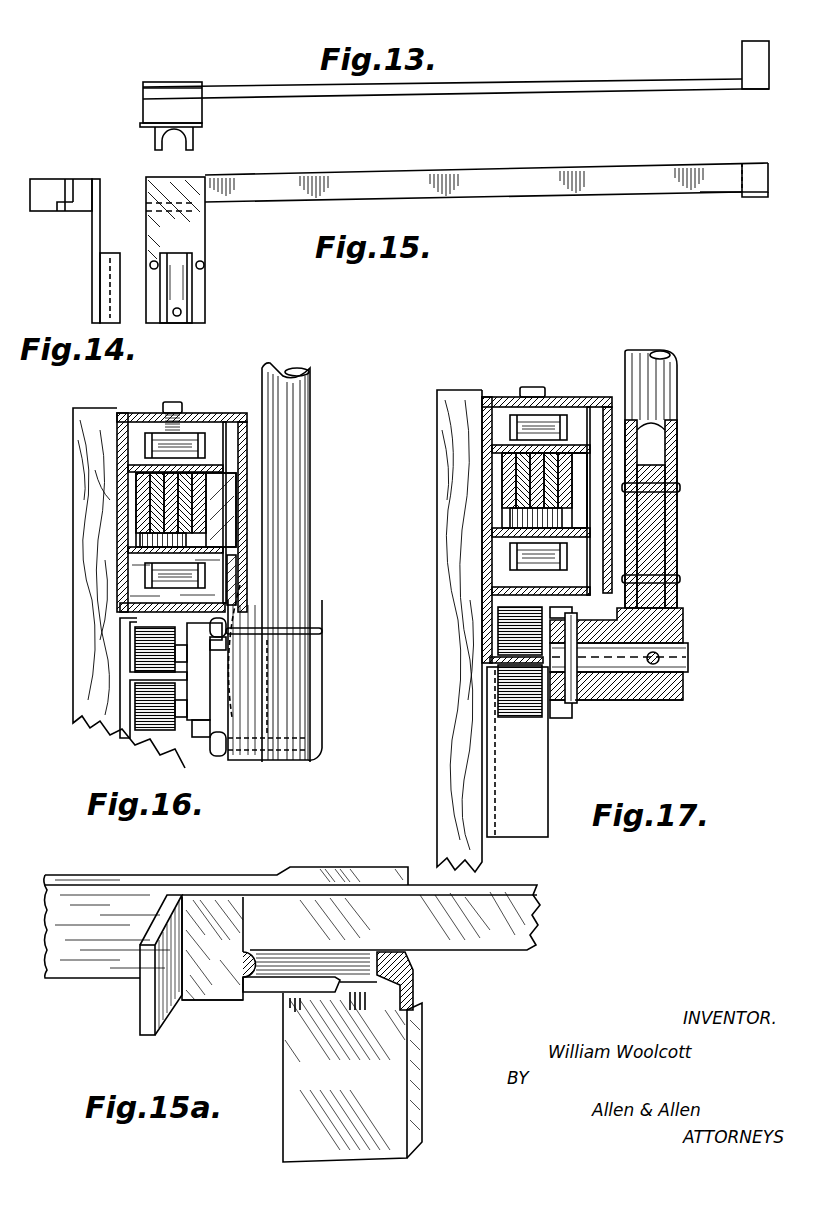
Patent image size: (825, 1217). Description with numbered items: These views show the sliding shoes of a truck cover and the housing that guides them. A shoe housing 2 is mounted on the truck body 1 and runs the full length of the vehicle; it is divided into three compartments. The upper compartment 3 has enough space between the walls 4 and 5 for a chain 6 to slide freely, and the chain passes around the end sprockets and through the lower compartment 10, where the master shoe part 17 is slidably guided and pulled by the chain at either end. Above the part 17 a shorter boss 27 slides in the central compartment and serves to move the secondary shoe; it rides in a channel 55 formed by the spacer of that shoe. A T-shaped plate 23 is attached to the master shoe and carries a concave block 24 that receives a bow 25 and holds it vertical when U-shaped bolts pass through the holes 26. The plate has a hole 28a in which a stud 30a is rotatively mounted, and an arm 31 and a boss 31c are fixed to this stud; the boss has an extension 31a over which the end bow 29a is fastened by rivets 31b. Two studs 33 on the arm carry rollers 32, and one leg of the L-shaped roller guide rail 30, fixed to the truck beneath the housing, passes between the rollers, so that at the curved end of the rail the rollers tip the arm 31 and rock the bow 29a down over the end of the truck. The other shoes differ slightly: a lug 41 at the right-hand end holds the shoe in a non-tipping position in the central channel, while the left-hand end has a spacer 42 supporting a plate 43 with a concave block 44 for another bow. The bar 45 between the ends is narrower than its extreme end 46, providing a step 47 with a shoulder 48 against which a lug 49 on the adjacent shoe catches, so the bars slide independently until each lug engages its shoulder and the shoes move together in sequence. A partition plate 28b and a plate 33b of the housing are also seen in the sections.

In FIG. 16, the truck body 1 is at (97, 707).
In FIG. 17, the truck body 1 is at (445, 447).
In FIG. 16, the shoe housing 2 is at (123, 518).
In FIG. 17, the shoe housing 2 is at (483, 417).
In FIG. 16, the upper compartment 3 is at (135, 440).
In FIG. 17, the upper compartment 3 is at (500, 420).
In FIG. 16, the wall 4 is at (188, 440).
In FIG. 17, the wall 4 is at (543, 422).
In FIG. 16, the wall 5 is at (120, 483).
In FIG. 17, the wall 5 is at (572, 443).
In FIG. 16, the chain 6 is at (207, 424).
In FIG. 17, the chain 6 is at (548, 412).
In FIG. 16, the lower compartment 10 is at (120, 613).
In FIG. 17, the lower compartment 10 is at (503, 565).
In FIG. 16, the master shoe part 17 is at (147, 590).
In FIG. 17, the master shoe part 17 is at (480, 605).
In FIG. 16, the plate 23 is at (230, 588).
In FIG. 17, the plate 23 is at (610, 698).
In FIG. 16, the concave block 24 is at (277, 680).
In FIG. 16, the bow 25 is at (300, 513).
In FIG. 16, the holes 26 is at (219, 651).
In FIG. 16, the boss 27 is at (218, 492).
In FIG. 17, the hole 28a is at (613, 643).
In FIG. 16, the partition plate 28b is at (120, 532).
In FIG. 17, the partition plate 28b is at (503, 488).
In FIG. 17, the end bow 29a is at (673, 403).
In FIG. 16, the roller guide rail 30 is at (127, 665).
In FIG. 17, the roller guide rail 30 is at (500, 662).
In FIG. 17, the stud 30a is at (683, 652).
In FIG. 17, the arm 31 is at (583, 622).
In FIG. 17, the extension 31a is at (663, 538).
In FIG. 17, the rivets 31b is at (675, 488).
In FIG. 17, the boss 31c is at (685, 685).
In FIG. 16, the rollers 32 is at (145, 650).
In FIG. 17, the rollers 32 is at (508, 637).
In FIG. 16, the studs 33 is at (185, 727).
In FIG. 17, the studs 33 is at (548, 606).
In FIG. 16, the partition plate 33b is at (220, 470).
In FIG. 17, the partition plate 33b is at (587, 450).
In FIG. 13, the lug 41 is at (753, 52).
In FIG. 14, the lug 41 is at (41, 185).
In FIG. 15A, the lug 41 is at (145, 1005).
In FIG. 13, the spacer 42 is at (190, 112).
In FIG. 14, the spacer 42 is at (80, 186).
In FIG. 15A, the spacer 42 is at (305, 870).
In FIG. 13, the plate 43 is at (150, 128).
In FIG. 14, the plate 43 is at (97, 224).
In FIG. 15, the plate 43 is at (197, 240).
In FIG. 15A, the plate 43 is at (318, 1140).
In FIG. 13, the concave block 44 is at (188, 133).
In FIG. 14, the concave block 44 is at (108, 260).
In FIG. 15, the concave block 44 is at (183, 297).
In FIG. 15A, the concave block 44 is at (425, 1040).
In FIG. 13, the bar 45 is at (432, 88).
In FIG. 14, the bar 45 is at (68, 182).
In FIG. 15, the bar 45 is at (408, 183).
In FIG. 15A, the bar 45 is at (480, 943).
In FIG. 13, the extreme end 46 is at (768, 90).
In FIG. 15, the extreme end 46 is at (764, 197).
In FIG. 15A, the extreme end 46 is at (232, 1001).
In FIG. 15, the step 47 is at (740, 193).
In FIG. 15A, the step 47 is at (217, 992).
In FIG. 15, the shoulder 48 is at (741, 198).
In FIG. 15A, the shoulder 48 is at (248, 958).
In FIG. 13, the lug 49 is at (197, 88).
In FIG. 14, the lug 49 is at (62, 207).
In FIG. 15A, the lug 49 is at (267, 993).
In FIG. 16, the channel 55 is at (215, 518).
In FIG. 17, the channel 55 is at (577, 492).